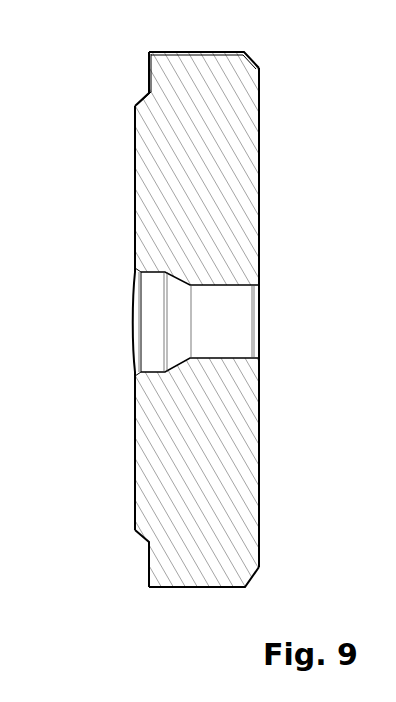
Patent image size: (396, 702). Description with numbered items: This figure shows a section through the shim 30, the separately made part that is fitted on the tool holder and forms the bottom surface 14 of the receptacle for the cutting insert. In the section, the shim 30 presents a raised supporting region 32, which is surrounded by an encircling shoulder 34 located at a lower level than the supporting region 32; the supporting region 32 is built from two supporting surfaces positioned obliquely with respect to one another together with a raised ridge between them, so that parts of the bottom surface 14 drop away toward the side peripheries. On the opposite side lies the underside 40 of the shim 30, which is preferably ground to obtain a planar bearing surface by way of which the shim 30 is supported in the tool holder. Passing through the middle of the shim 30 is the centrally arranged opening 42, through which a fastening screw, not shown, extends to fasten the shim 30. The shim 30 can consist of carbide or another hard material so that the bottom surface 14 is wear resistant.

The shim 30 is at (72, 158).
The supporting region 32 is at (134, 206).
The encircling shoulder 34 is at (148, 73).
The underside 40 is at (261, 215).
The centrally arranged opening 42 is at (134, 318).
The bottom surface 14 is at (134, 458).